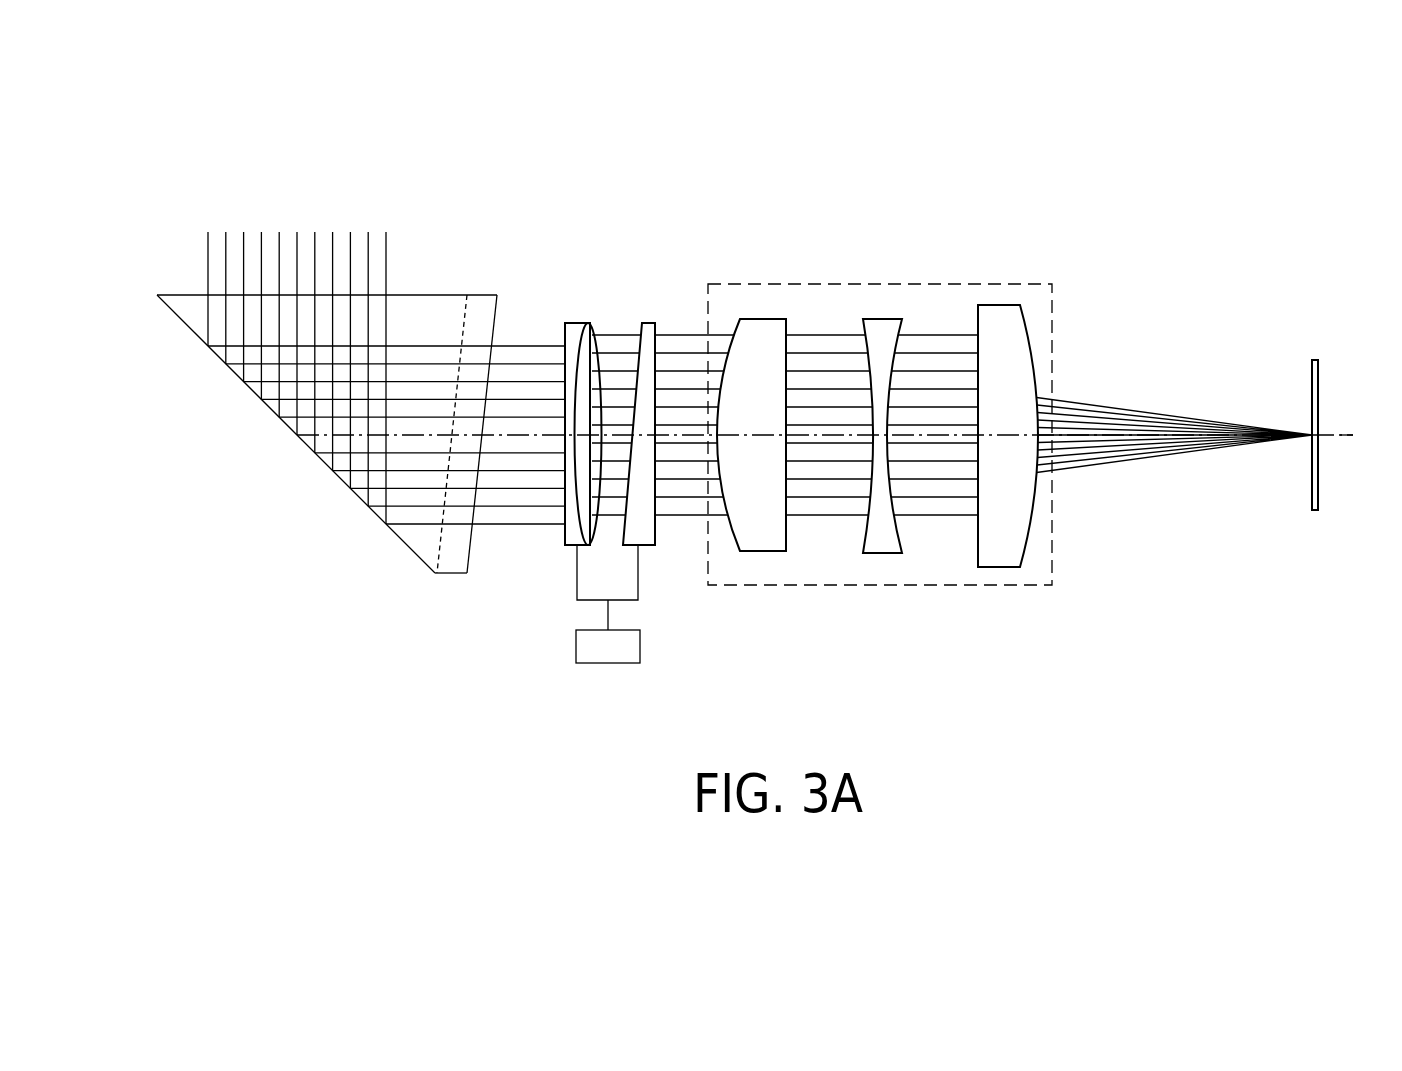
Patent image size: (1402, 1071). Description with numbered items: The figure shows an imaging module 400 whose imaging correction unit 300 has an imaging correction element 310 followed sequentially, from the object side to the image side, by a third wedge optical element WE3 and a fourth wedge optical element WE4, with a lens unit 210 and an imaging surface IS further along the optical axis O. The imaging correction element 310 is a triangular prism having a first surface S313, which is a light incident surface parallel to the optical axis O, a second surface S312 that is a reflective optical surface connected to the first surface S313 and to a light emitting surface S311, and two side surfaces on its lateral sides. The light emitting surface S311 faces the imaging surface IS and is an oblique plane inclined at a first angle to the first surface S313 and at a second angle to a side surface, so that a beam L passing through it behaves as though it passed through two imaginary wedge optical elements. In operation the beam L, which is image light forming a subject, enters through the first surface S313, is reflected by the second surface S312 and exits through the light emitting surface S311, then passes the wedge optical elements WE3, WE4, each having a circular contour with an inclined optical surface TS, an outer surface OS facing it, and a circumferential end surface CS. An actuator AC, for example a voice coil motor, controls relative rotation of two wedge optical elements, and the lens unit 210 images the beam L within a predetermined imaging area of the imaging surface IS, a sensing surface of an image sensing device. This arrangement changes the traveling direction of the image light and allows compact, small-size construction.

The imaging correction unit 300 is at (631, 444).
The imaging correction element 310 is at (338, 441).
The light emitting surface S311 is at (473, 538).
The second surface S312 is at (396, 534).
The first surface S313 is at (419, 293).
The beam L is at (226, 243).
The third wedge optical element WE3 is at (580, 323).
The fourth wedge optical element WE4 is at (647, 323).
The circumferential end surface CS is at (573, 321).
The inclined optical surface TS is at (592, 365).
The outer surface OS is at (564, 511).
The actuator AC is at (613, 654).
The lens unit 210 is at (1002, 283).
The imaging surface IS is at (1312, 380).
The optical axis O is at (1342, 435).
The imaging module 400 is at (1315, 697).